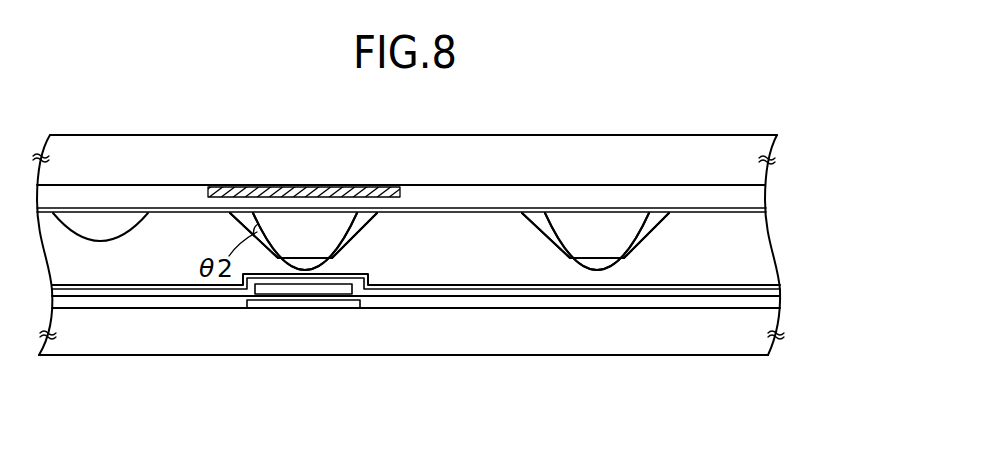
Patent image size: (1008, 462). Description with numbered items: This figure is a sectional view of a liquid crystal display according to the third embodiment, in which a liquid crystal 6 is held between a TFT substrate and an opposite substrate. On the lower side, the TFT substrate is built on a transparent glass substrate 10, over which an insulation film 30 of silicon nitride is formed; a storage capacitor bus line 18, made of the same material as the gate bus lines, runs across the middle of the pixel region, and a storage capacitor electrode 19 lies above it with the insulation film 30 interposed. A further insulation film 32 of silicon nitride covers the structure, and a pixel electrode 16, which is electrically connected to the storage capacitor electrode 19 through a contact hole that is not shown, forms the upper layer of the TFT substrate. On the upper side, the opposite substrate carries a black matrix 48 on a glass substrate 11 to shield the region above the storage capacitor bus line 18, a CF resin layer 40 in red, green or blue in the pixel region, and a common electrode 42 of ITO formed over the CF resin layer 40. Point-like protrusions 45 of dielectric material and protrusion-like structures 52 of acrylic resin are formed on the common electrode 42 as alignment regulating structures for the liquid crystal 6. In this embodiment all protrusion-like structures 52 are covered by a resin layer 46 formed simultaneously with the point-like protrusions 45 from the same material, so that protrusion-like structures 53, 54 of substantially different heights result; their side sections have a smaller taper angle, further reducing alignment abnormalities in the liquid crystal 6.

The glass substrate 10 is at (770, 354).
The glass substrate 11 is at (767, 178).
The pixel electrode 16 is at (779, 286).
The storage capacitor bus line 18 is at (343, 303).
The storage capacitor electrode 19 is at (300, 291).
The insulation film 30 is at (781, 306).
The insulation film 32 is at (781, 294).
The CF resin layer 40 is at (768, 205).
The common electrode 42 is at (768, 212).
The point-like protrusion 45 is at (128, 225).
The resin layer 46 is at (345, 243).
The black matrix 48 is at (365, 186).
The protrusion-like structure 52 is at (337, 228).
The protrusion-like structure 53 is at (422, 227).
The protrusion-like structure 54 is at (714, 227).
The liquid crystal 6 is at (774, 235).